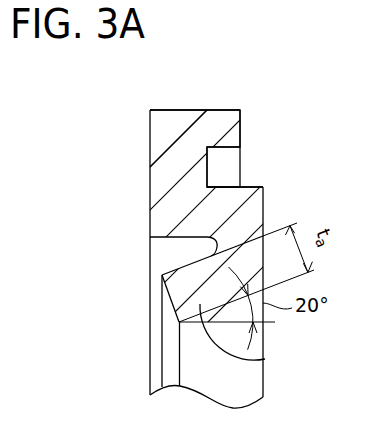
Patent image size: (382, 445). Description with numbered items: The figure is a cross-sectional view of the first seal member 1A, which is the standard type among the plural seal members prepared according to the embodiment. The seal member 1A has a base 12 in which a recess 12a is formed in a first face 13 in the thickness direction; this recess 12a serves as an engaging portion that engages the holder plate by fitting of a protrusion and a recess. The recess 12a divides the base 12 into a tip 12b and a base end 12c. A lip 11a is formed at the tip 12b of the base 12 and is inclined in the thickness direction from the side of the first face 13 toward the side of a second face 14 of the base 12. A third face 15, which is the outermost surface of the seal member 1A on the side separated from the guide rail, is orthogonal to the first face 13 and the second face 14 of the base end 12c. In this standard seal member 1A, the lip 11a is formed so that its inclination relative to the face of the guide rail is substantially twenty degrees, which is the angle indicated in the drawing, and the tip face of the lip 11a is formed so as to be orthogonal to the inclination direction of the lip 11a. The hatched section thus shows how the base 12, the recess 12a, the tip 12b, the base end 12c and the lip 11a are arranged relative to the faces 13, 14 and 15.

The first seal member 1A is at (242, 93).
The lip 11a is at (265, 358).
The base 12 is at (244, 127).
The recess 12a is at (207, 172).
The tip 12b is at (198, 221).
The base end 12c is at (178, 124).
The first face 13 is at (240, 152).
The second face 14 is at (149, 189).
The third face 15 is at (188, 110).